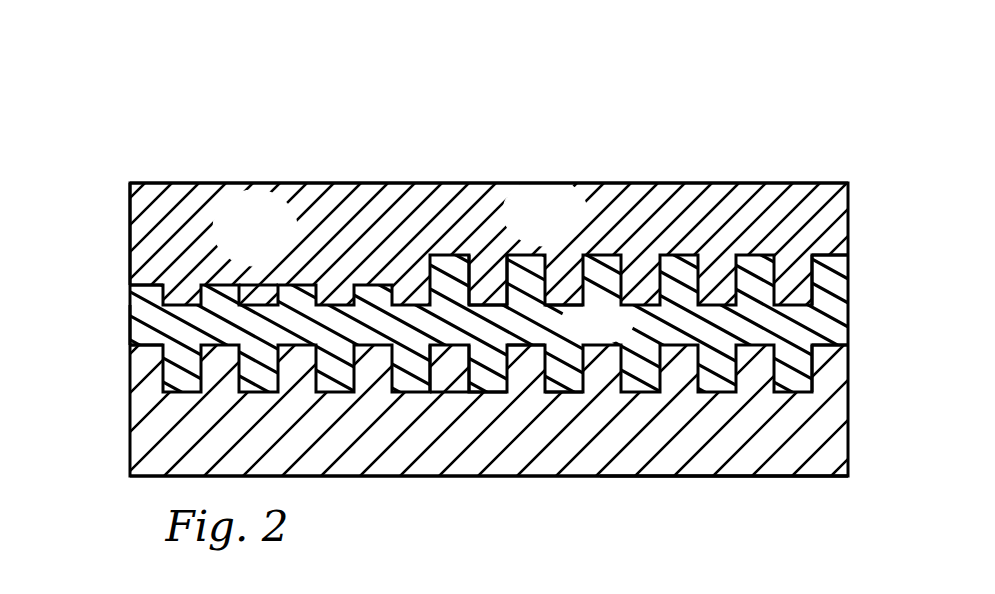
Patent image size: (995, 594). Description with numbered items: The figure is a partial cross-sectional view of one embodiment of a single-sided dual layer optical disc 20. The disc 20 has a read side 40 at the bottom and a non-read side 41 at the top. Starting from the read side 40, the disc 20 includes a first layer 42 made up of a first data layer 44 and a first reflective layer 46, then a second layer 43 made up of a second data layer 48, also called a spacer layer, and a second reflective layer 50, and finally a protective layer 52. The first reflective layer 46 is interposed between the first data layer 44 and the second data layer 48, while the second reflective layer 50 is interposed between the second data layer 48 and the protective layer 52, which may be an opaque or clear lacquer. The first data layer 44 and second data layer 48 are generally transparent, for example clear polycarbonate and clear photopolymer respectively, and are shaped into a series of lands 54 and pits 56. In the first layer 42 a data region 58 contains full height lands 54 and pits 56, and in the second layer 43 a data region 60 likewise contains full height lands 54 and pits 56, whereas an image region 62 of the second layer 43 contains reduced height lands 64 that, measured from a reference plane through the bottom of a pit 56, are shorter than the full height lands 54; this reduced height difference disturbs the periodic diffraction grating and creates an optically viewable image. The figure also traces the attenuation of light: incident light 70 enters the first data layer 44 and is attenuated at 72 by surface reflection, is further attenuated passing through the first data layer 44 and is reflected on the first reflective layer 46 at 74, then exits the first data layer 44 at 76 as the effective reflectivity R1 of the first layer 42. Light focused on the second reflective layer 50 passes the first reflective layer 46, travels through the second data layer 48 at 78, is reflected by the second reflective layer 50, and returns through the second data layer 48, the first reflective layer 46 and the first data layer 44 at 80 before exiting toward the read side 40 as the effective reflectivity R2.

The optical disc 20 is at (500, 90).
The read side 40 is at (650, 480).
The non-read side 41 is at (272, 182).
The first layer 42 is at (121, 438).
The second layer 43 is at (119, 235).
The first data layer 44 is at (130, 443).
The first reflective layer 46 is at (142, 377).
The second data layer 48 is at (138, 325).
The second reflective layer 50 is at (135, 294).
The protective layer 52 is at (130, 220).
The full height lands 54 is at (826, 250).
The pits 56 is at (822, 290).
The data region 58 is at (555, 336).
The data region 60 is at (578, 241).
The image region 62 is at (282, 265).
The reduced height lands 64 is at (140, 285).
The incident light 70 is at (482, 400).
The attenuation by surface reflection 72 is at (478, 427).
The reflection on first reflective layer 74 is at (480, 365).
The exit of reflected light from first data layer 76 is at (498, 312).
The passage through second data layer 78 is at (445, 398).
The return passage through first data layer 80 is at (533, 425).
The effective reflectivity of first layer R1 is at (494, 312).
The effective reflectivity of second reflective layer R2 is at (502, 312).